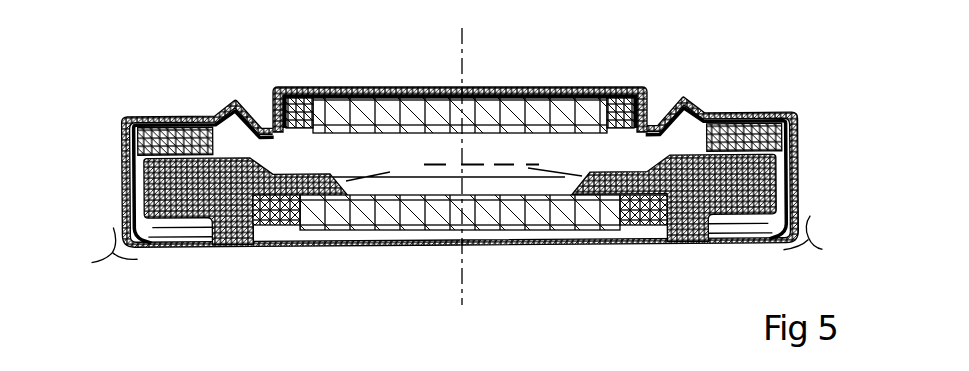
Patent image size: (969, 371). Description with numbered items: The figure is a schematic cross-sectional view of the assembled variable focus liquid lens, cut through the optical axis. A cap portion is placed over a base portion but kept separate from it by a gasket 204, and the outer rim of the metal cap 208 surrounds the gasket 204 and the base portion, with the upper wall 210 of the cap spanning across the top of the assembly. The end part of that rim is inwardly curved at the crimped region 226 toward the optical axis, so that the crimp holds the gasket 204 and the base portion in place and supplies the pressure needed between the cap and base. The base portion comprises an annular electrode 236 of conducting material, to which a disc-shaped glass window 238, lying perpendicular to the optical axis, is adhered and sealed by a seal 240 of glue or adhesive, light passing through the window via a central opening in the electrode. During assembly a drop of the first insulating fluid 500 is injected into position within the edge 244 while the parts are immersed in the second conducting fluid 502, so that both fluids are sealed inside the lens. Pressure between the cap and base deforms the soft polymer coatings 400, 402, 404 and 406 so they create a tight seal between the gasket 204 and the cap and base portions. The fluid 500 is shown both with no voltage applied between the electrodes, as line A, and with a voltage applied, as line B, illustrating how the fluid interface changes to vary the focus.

The gasket 204 is at (122, 126).
The metal cap 208 is at (797, 186).
The cap / cover 210 is at (407, 118).
The crimped region 226 is at (457, 245).
The annular electrode 236 is at (697, 228).
The glass window 238 is at (509, 218).
The seal 240 is at (652, 225).
The edge 244 is at (349, 178).
The soft polymer coating 400 is at (459, 105).
The soft polymer coating 402 is at (183, 116).
The soft polymer coating 404 is at (462, 175).
The polymer coating 406 is at (128, 158).
The first insulating fluid 500 is at (405, 180).
The second conducting fluid 502 is at (305, 159).
The line A is at (578, 165).
The line B is at (507, 167).